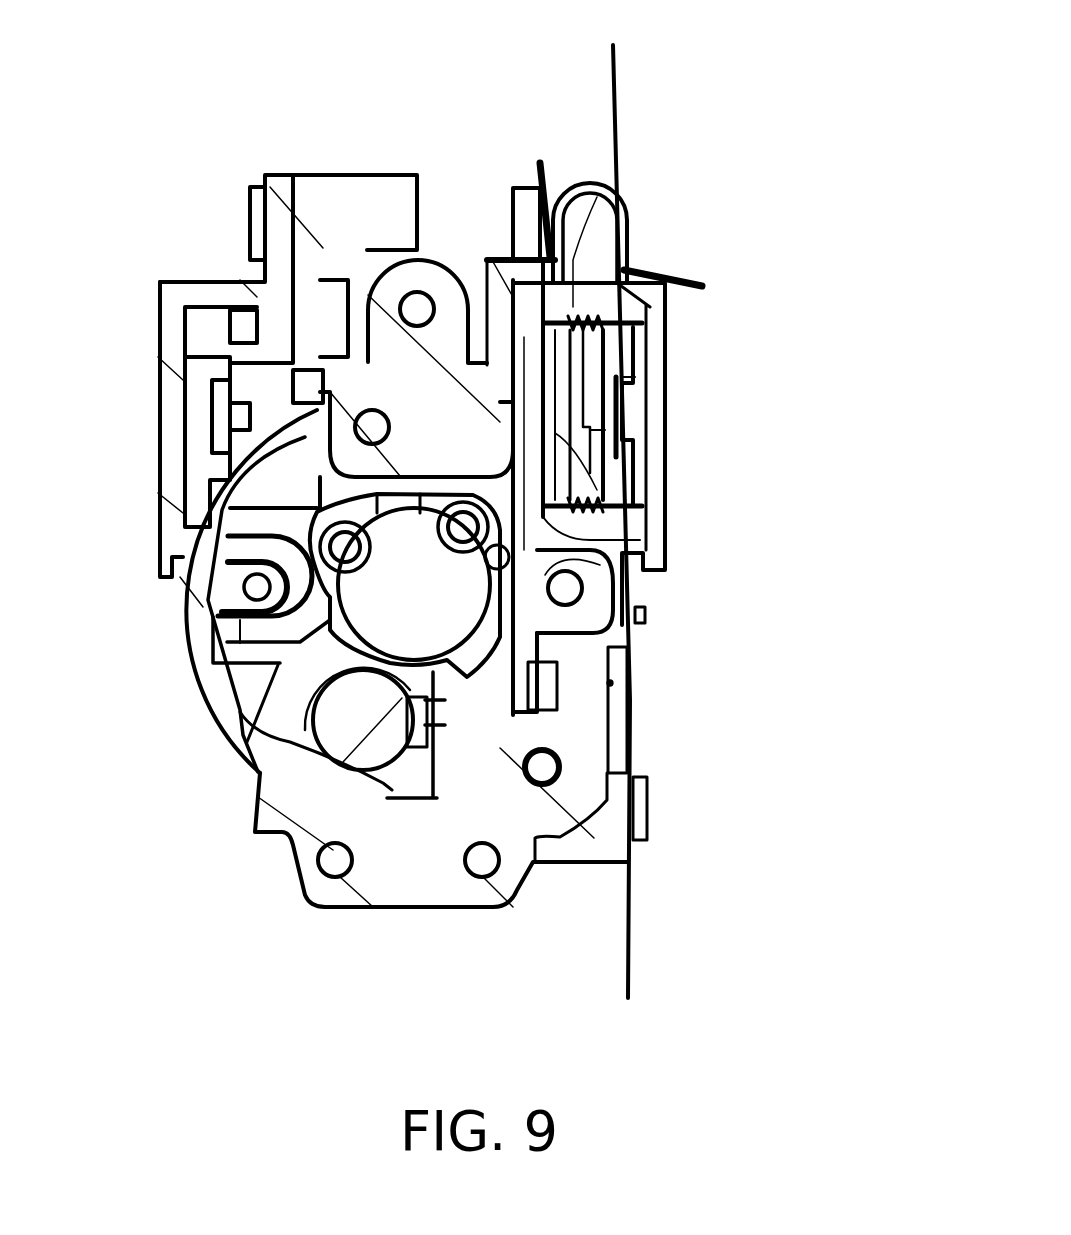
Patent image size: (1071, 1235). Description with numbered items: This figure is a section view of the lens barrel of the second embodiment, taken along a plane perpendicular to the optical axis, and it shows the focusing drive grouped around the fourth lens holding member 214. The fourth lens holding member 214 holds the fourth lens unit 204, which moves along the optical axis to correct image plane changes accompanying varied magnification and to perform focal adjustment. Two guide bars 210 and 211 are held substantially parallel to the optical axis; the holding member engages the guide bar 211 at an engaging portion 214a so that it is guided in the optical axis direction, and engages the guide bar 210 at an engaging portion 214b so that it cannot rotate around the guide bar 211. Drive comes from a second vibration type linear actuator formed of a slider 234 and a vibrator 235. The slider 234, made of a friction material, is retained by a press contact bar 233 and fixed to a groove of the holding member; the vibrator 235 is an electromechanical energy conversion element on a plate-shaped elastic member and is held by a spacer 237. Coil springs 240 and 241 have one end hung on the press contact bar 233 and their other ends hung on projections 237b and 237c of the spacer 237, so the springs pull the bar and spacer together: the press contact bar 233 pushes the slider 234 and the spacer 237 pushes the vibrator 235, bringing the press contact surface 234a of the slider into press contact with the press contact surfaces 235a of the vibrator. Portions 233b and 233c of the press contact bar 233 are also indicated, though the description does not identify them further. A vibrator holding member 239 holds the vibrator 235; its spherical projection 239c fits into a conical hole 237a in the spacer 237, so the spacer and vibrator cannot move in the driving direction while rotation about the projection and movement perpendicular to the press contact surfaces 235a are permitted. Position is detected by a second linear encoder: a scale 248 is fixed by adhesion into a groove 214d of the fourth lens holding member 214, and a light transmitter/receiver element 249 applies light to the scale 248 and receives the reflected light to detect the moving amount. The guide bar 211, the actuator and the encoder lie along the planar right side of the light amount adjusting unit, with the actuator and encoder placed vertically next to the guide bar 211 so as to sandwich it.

The fourth lens unit 204 is at (250, 758).
The guide bar 210 is at (213, 607).
The guide bar 211 is at (580, 592).
The fourth lens holding member 214 is at (455, 735).
The engaging portion 214a is at (610, 672).
The engaging portion 214b is at (213, 663).
The groove 214d is at (543, 860).
The press contact bar 233 is at (602, 427).
The coil spring arch 233b is at (600, 300).
The lever lower portion 233c is at (640, 550).
The slider 234 is at (525, 578).
The press contact surface 234a is at (518, 400).
The vibrator 235 is at (650, 455).
The press contact surfaces 235a is at (618, 370).
The spacer 237 is at (636, 345).
The conical hole 237a is at (637, 420).
The projection 237b is at (640, 272).
The projection 237c is at (653, 513).
The vibrator holding member 239 is at (653, 327).
The spherical projection 239c is at (625, 405).
The coil spring 240 is at (613, 167).
The coil spring 241 is at (603, 607).
The scale 248 is at (637, 815).
The light transmitter/receiver element 249 is at (607, 735).